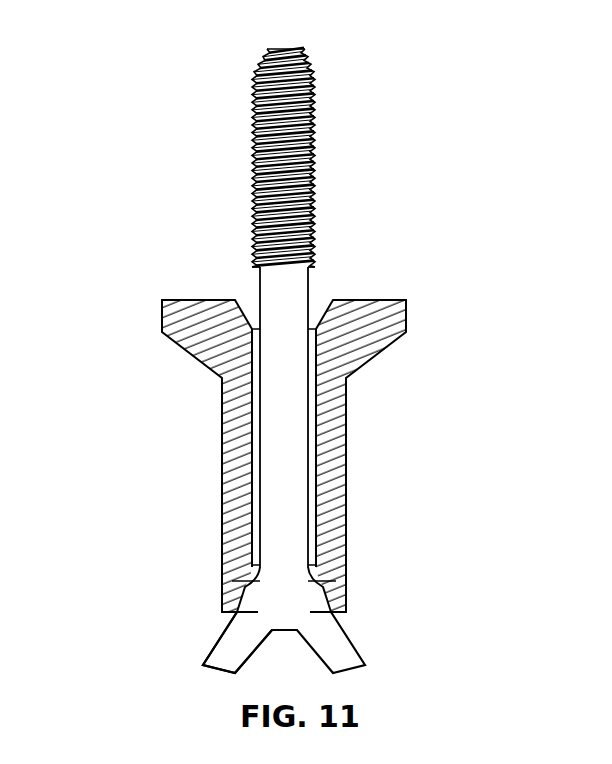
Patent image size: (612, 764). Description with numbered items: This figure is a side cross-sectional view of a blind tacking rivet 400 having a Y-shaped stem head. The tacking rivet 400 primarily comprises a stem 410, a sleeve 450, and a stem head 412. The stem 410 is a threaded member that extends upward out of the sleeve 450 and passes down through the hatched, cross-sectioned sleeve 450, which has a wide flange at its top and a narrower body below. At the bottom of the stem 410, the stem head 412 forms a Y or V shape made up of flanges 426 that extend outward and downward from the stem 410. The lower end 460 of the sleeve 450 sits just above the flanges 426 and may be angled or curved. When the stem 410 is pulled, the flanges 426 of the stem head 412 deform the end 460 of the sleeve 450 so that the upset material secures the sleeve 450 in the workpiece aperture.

The tacking rivet 400 is at (148, 55).
The stem 410 is at (208, 162).
The sleeve 450 is at (332, 425).
The end 460 is at (348, 600).
The stem head 412 is at (376, 640).
The flanges 426 is at (221, 642).